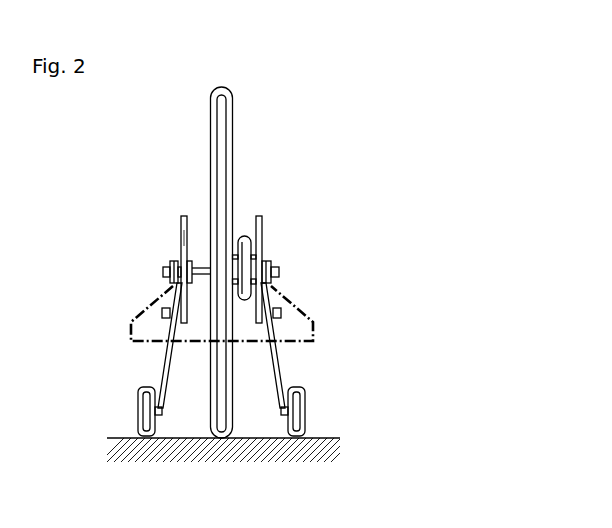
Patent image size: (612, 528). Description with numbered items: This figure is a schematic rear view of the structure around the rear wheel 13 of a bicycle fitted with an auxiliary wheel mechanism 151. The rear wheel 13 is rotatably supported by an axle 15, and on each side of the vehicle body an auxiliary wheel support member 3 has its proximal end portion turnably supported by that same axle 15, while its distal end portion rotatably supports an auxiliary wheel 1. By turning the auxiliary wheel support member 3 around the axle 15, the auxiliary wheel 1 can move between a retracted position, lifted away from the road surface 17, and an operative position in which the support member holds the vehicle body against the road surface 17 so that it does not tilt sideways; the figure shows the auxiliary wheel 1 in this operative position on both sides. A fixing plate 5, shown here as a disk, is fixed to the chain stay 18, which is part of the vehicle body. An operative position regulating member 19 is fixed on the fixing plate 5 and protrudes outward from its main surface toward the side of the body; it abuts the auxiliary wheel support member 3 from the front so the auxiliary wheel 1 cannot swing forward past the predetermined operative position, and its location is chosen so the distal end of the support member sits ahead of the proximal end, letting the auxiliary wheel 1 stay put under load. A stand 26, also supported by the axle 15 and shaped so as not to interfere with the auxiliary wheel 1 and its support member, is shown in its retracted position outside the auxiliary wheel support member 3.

The auxiliary wheel 1 is at (138, 412).
The auxiliary wheel support member 3 is at (165, 358).
The fixing plate 5 is at (183, 216).
The rear wheel 13 is at (233, 113).
The axle 15 is at (164, 268).
The road surface 17 is at (263, 440).
The chain stay 18 is at (188, 261).
The operative position regulating member 19 is at (162, 315).
The stand 26 is at (137, 316).
The auxiliary wheel mechanism 151 is at (178, 238).